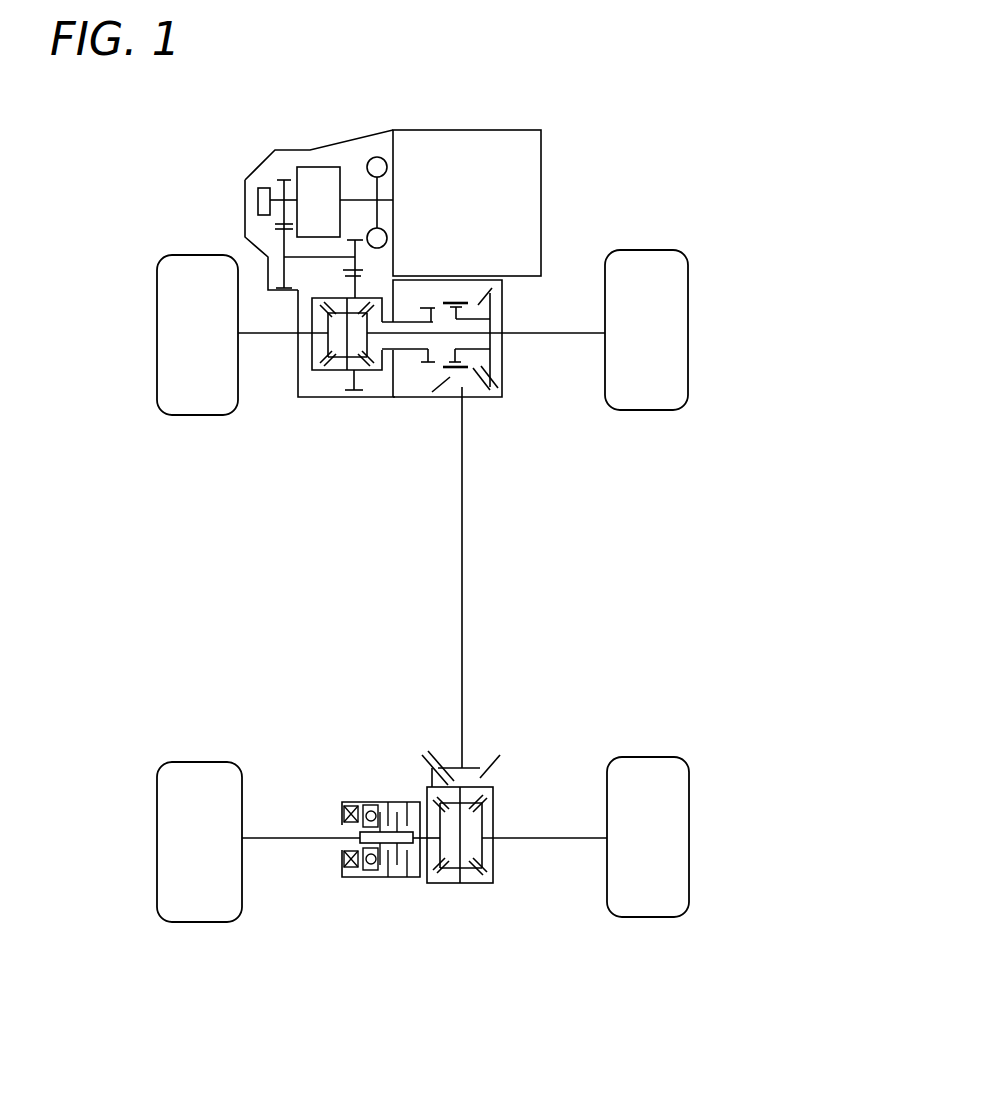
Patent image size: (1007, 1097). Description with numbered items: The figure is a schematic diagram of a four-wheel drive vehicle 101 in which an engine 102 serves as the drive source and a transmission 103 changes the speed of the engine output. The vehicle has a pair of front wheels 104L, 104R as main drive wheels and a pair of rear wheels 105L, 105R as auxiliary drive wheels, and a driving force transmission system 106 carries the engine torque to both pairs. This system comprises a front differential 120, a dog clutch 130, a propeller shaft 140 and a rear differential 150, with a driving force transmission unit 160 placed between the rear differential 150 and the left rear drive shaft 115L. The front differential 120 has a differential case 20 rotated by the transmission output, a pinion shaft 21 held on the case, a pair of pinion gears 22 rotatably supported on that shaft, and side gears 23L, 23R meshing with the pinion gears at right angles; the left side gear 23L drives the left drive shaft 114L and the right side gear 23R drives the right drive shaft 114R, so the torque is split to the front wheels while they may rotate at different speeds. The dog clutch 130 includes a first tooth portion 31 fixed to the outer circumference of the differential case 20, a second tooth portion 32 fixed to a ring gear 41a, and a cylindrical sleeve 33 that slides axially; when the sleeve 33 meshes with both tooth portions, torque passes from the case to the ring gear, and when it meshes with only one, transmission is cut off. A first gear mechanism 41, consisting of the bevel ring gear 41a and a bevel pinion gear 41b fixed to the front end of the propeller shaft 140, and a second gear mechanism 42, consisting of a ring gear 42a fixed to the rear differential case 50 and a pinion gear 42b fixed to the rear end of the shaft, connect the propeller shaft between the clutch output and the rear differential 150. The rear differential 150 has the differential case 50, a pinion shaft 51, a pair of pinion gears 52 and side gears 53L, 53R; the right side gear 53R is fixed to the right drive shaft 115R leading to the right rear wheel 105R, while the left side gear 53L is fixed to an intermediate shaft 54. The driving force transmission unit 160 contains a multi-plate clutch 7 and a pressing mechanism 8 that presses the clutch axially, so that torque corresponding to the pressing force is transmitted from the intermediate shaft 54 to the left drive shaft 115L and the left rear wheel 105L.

The four-wheel drive vehicle 101 is at (611, 73).
The engine 102 is at (444, 130).
The transmission 103 is at (310, 147).
The left front wheel 104L is at (157, 337).
The right front wheel 104R is at (688, 325).
The left rear wheel 105L is at (157, 885).
The right rear wheel 105R is at (689, 882).
The driving force transmission system 106 is at (611, 501).
The left drive shaft 114L is at (288, 333).
The right drive shaft 114R is at (543, 333).
The left drive shaft 115L is at (298, 842).
The right drive shaft 115R is at (535, 840).
The front differential 120 is at (305, 370).
The dog clutch 130 is at (458, 292).
The propeller shaft 140 is at (464, 596).
The rear differential 150 is at (503, 867).
The driving force transmission unit 160 is at (302, 912).
The differential case 20 is at (362, 372).
The pinion shaft 21 is at (345, 362).
The pinion gear 22 is at (343, 322).
The left side gear 23L is at (325, 345).
The right side gear 23R is at (376, 368).
The first tooth portion 31 is at (426, 311).
The second tooth portion 32 is at (457, 362).
The sleeve 33 is at (451, 303).
The first gear mechanism 41 is at (568, 367).
The ring gear 41a is at (492, 357).
The pinion gear 41b is at (486, 392).
The second gear mechanism 42 is at (556, 690).
The ring gear 42a is at (433, 762).
The pinion gear 42b is at (482, 762).
The differential case 50 is at (482, 884).
The pinion shaft 51 is at (465, 836).
The pinion gear 52 is at (494, 788).
The left side gear 53L is at (438, 885).
The right side gear 53R is at (481, 813).
The intermediate shaft 54 is at (428, 834).
The multi-plate clutch 7 is at (388, 880).
The pressing mechanism 8 is at (352, 880).